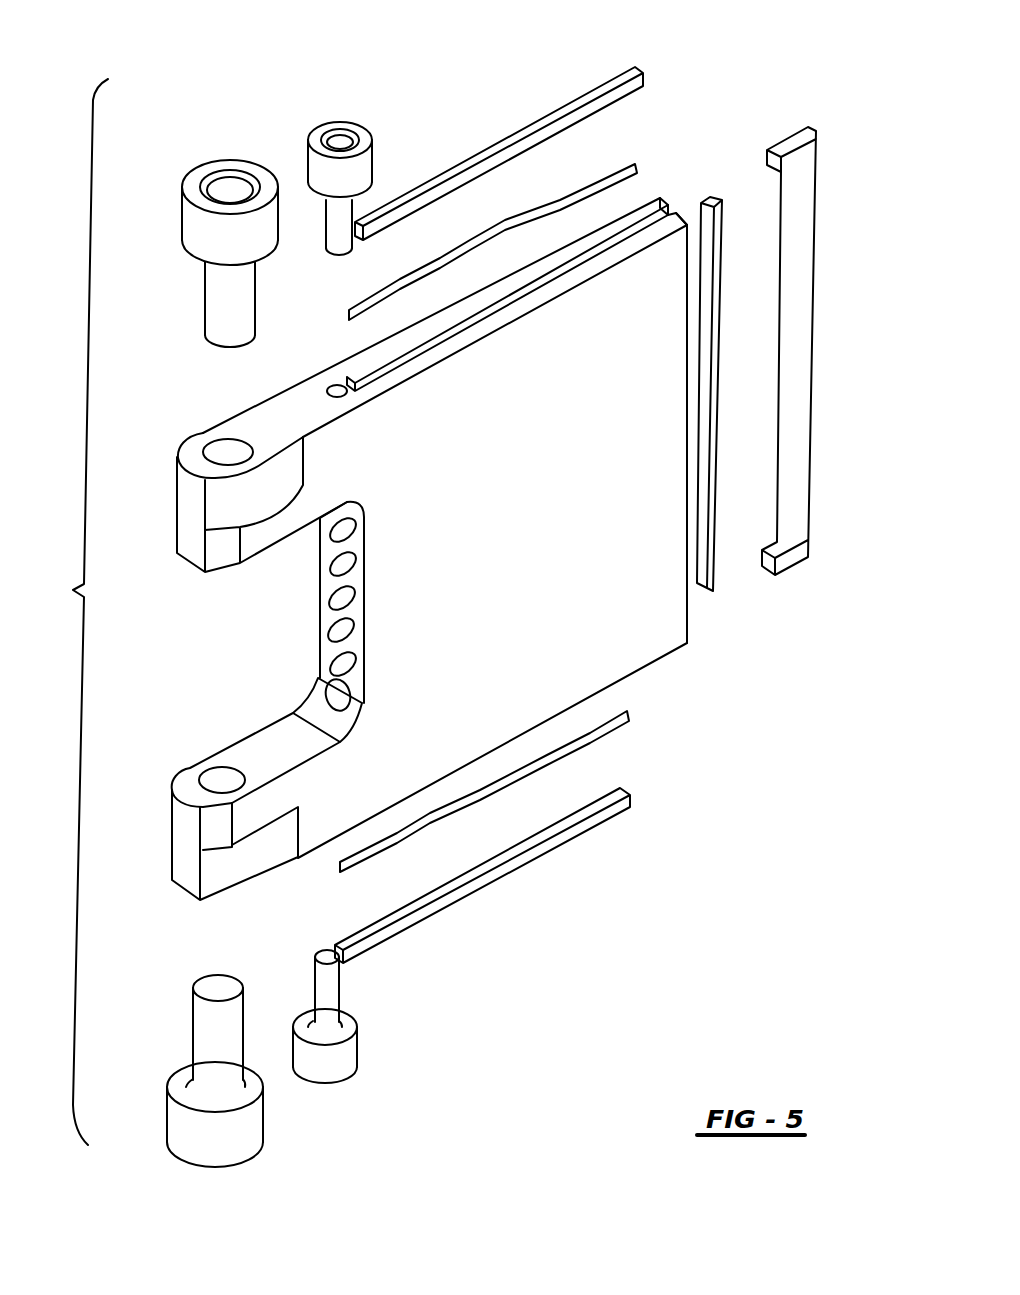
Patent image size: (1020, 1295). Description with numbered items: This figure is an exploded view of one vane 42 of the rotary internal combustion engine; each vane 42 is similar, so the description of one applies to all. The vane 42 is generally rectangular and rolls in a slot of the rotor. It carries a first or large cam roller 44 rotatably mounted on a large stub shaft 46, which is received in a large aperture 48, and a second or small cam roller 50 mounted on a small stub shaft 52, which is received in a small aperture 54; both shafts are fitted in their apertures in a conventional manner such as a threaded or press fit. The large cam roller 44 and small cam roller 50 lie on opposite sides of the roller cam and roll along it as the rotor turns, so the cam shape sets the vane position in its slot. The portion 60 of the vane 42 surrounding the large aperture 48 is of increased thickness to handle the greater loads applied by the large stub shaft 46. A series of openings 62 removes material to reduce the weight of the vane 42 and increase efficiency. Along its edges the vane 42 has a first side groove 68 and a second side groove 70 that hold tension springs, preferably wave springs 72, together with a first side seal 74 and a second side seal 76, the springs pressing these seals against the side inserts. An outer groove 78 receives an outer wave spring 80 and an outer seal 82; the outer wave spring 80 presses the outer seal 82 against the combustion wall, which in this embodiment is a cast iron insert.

The vane 42 is at (71, 612).
The large cam roller 44 is at (260, 172).
The large stub shaft 46 is at (232, 302).
The large aperture 48 is at (220, 453).
The small cam roller 50 is at (365, 133).
The small stub shaft 52 is at (334, 227).
The small aperture 54 is at (336, 386).
The portion of increased thickness 60 is at (268, 490).
The openings 62 is at (350, 537).
The first side groove 68 is at (635, 210).
The second side groove 70 is at (637, 668).
The wave springs 72 is at (558, 205).
The first side seal 74 is at (575, 102).
The second side seal 76 is at (580, 826).
The outer groove 78 is at (667, 213).
The outer wave spring 80 is at (706, 210).
The outer seal 82 is at (800, 460).